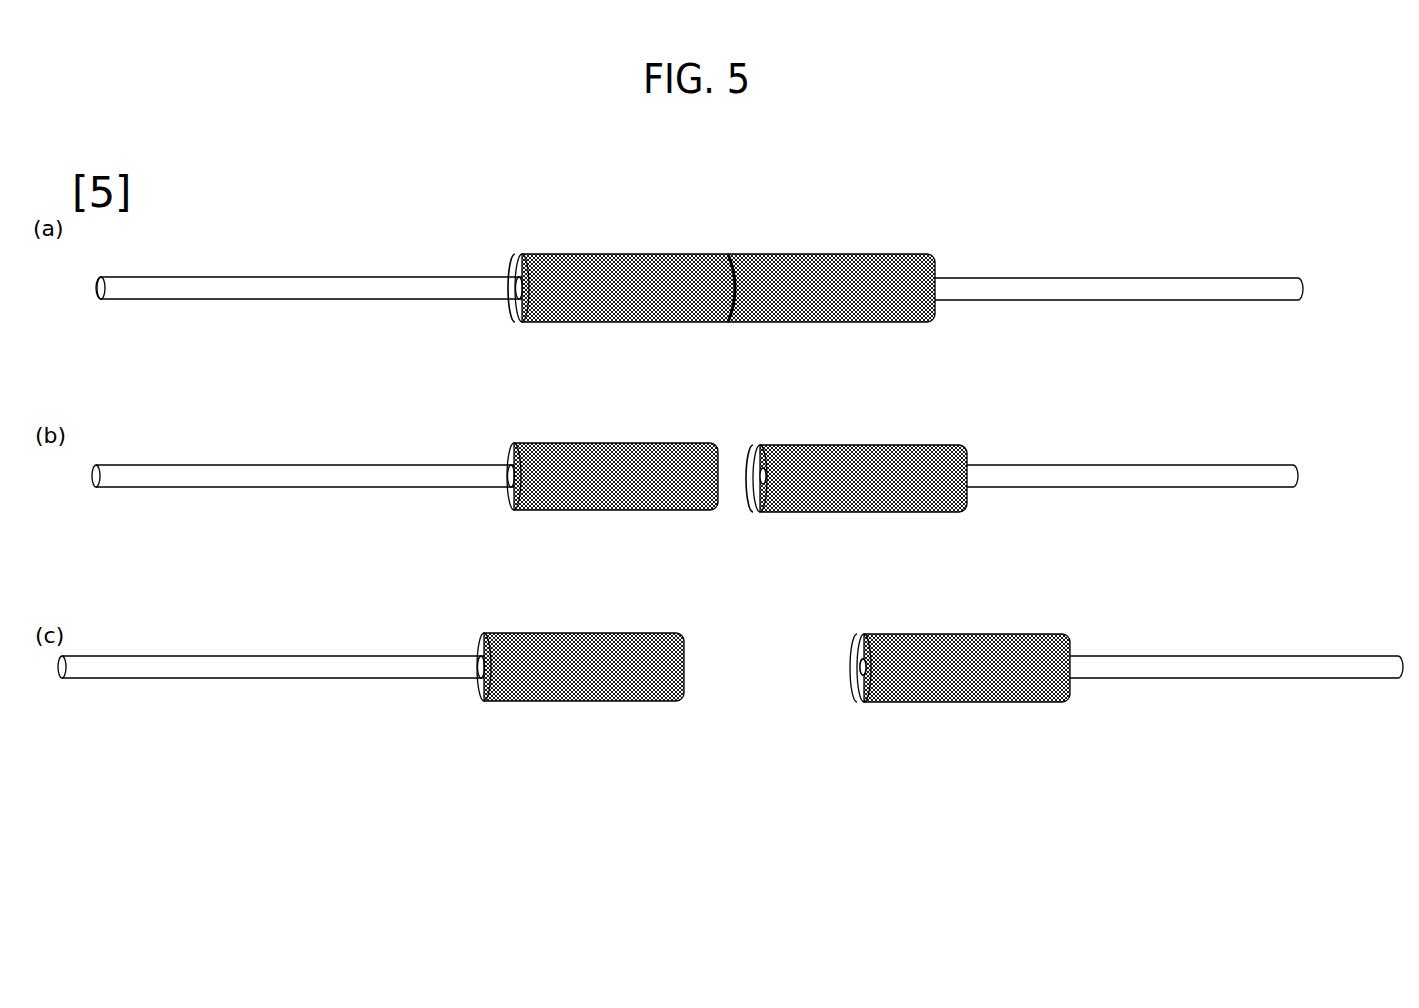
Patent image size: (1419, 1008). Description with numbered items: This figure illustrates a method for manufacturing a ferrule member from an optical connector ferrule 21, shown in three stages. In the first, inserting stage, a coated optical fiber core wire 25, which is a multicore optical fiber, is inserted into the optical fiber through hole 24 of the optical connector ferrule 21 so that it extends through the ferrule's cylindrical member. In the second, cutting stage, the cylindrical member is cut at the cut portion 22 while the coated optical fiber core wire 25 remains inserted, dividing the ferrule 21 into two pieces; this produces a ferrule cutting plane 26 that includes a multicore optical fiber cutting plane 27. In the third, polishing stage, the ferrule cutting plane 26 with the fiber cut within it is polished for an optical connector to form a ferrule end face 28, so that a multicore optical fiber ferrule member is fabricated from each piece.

The optical connector ferrule 21 is at (593, 257).
The cut portion 22 is at (735, 272).
The optical fiber through hole 24 is at (518, 298).
The coated optical fiber core wire 25 is at (358, 277).
The ferrule cutting plane 26 is at (760, 472).
The multicore optical fiber cutting plane 27 is at (755, 484).
The ferrule end face 28 is at (860, 640).